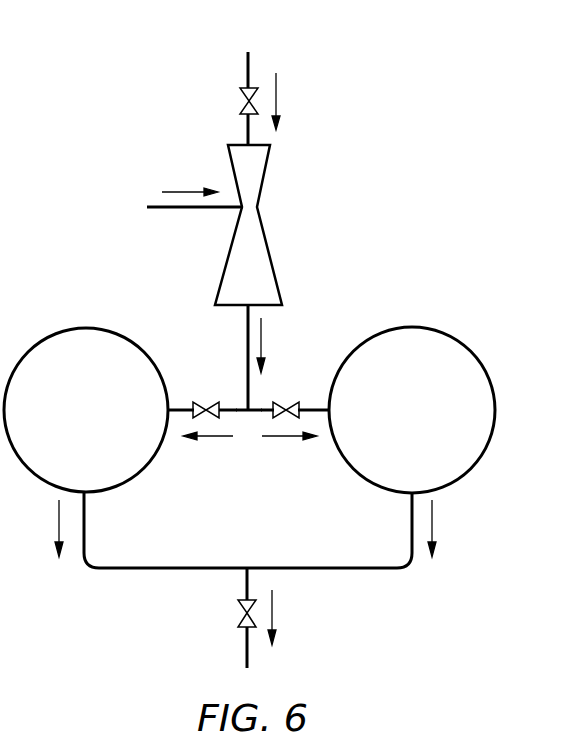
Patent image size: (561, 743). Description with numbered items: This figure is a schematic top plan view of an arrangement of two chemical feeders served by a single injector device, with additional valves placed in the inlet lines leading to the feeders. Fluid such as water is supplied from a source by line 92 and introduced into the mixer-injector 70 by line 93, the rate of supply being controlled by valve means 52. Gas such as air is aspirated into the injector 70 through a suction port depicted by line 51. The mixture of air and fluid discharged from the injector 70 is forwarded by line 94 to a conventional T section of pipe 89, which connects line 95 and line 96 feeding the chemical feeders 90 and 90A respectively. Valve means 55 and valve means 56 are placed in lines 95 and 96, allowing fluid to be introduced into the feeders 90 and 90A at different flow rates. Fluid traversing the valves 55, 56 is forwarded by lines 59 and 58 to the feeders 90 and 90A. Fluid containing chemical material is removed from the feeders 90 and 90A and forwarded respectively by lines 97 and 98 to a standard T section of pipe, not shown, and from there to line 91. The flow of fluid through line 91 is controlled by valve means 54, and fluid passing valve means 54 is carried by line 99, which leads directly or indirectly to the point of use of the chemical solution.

The line 92 is at (247, 66).
The valve means 52 is at (241, 101).
The line 93 is at (247, 130).
The mixer-injector 70 is at (286, 236).
The line 51 is at (205, 212).
The line 94 is at (246, 325).
The T section of pipe 89 is at (247, 413).
The line 95 is at (236, 408).
The line 96 is at (264, 407).
The valve means 55 is at (202, 403).
The valve means 56 is at (296, 402).
The line 59 is at (171, 413).
The line 58 is at (320, 413).
The chemical feeder 90 is at (40, 342).
The chemical feeder 90A is at (460, 341).
The line 97 is at (86, 524).
The line 98 is at (410, 524).
The line 91 is at (246, 586).
The valve means 54 is at (240, 613).
The line 99 is at (246, 648).